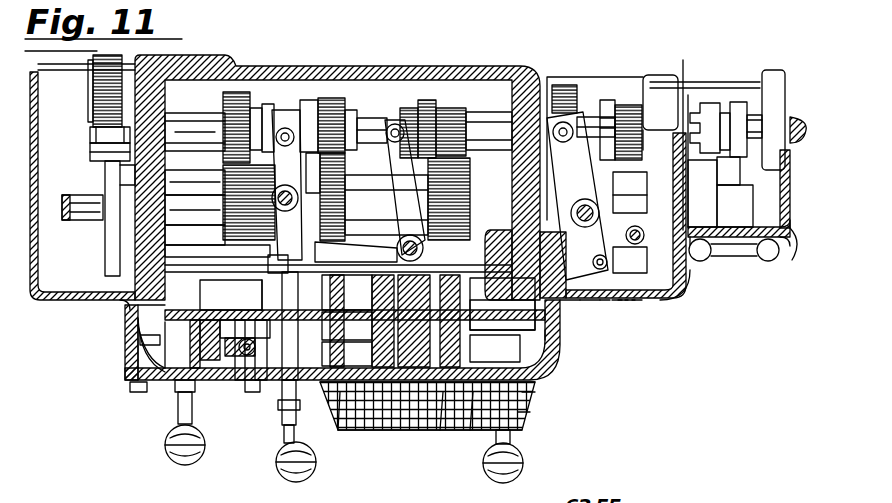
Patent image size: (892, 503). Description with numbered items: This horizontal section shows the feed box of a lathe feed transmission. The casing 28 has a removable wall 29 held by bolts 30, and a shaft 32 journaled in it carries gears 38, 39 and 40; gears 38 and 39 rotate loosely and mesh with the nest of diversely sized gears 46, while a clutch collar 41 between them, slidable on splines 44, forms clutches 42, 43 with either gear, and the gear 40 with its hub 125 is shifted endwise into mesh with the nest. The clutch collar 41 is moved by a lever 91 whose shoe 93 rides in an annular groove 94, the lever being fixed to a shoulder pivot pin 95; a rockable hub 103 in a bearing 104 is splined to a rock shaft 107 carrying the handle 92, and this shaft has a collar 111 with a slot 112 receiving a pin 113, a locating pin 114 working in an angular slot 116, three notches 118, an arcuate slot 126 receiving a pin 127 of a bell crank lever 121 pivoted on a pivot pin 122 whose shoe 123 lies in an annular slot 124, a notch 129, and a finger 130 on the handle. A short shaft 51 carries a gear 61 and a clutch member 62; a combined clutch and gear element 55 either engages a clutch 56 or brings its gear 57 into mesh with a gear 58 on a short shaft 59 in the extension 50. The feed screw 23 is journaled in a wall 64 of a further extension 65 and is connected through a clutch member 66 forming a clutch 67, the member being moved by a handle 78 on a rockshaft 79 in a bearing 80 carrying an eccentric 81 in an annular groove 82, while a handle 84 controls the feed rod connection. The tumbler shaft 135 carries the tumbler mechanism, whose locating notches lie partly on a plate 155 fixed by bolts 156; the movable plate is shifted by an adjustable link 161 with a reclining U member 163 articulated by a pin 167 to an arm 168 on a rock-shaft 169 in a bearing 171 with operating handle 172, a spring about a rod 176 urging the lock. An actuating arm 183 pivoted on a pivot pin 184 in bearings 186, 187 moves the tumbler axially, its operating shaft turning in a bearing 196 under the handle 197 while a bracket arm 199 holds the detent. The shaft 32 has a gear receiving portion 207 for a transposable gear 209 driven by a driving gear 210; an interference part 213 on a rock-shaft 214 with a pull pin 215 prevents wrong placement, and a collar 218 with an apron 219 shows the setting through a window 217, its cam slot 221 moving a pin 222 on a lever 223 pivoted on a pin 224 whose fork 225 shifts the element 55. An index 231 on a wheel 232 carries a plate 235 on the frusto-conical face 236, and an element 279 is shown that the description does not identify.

The feed screw 23 is at (798, 118).
The casing 28 is at (124, 305).
The removable wall 29 is at (128, 332).
The bolts 30 is at (132, 393).
The shaft 32 is at (196, 112).
The gear 38 is at (244, 100).
The gear 39 is at (347, 100).
The gear 40 is at (457, 152).
The clutch collar 41 is at (313, 103).
The clutch 42 is at (257, 105).
The clutch 43 is at (320, 102).
The splines 44 is at (270, 112).
The nest of gears 46 is at (433, 155).
The extension of the casing 50 is at (680, 298).
The short shaft 51 is at (622, 110).
The combined clutch and gear element 55 is at (566, 84).
The clutch 56 is at (543, 118).
The gear 57 is at (597, 130).
The gear 58 is at (625, 170).
The short shaft 59 is at (625, 200).
The gear 61 is at (660, 102).
The clutch member 62 is at (688, 105).
The wall 64 is at (767, 72).
The further extension 65 is at (793, 240).
The clutch member 66 is at (722, 108).
The clutch 67 is at (700, 108).
The handle 78 is at (713, 253).
The rockshaft 79 is at (724, 184).
The bearing 80 is at (735, 214).
The eccentric 81 is at (735, 162).
The annular groove 82 is at (727, 102).
The handle 84 is at (770, 258).
The lever 91 is at (216, 176).
The handle 92 is at (312, 460).
The shoe 93 is at (333, 187).
The annular groove 94 is at (326, 154).
The shoulder pivot pin 95 is at (226, 205).
The rockable hub 103 is at (272, 318).
The bearing 104 is at (263, 292).
The rock shaft 107 is at (278, 418).
The collar 111 is at (266, 256).
The slot 112 is at (236, 258).
The pin 113 is at (287, 213).
The locating pin 114 is at (264, 383).
The angular slot 116 is at (250, 402).
The notches 118 is at (258, 285).
The bell crank lever 121 is at (432, 123).
The pivot pin 122 is at (397, 248).
The shoe 123 is at (398, 150).
The annular slot 124 is at (378, 118).
The hub 125 is at (462, 110).
The arcuate slot 126 is at (348, 337).
The pin 127 is at (370, 308).
The notch 129 is at (308, 362).
The finger 130 is at (283, 445).
The tumbler shaft 135 is at (524, 264).
The plate 155 is at (577, 330).
The bolts 156 is at (577, 352).
The adjustable link 161 is at (125, 356).
The reclining U member 163 is at (232, 312).
The pin 167 is at (130, 380).
The arm 168 is at (124, 343).
The rock-shaft 169 is at (176, 392).
The bearing 171 is at (177, 423).
The operating handle 172 is at (172, 450).
The rod 176 is at (242, 356).
The actuating arm 183 is at (368, 302).
The pivot pin 184 is at (393, 432).
The bearing 186 is at (465, 285).
The bearing 187 is at (369, 432).
The bearing 196 is at (442, 352).
The operating handle 197 is at (518, 444).
The arm 199 is at (456, 318).
The gear receiving portion 207 is at (92, 132).
The transposable gear 209 is at (92, 157).
The driving gear 210 is at (93, 78).
The interference part 213 is at (110, 235).
The rock-shaft 214 is at (593, 304).
The spring-pressed pull pin 215 is at (85, 222).
The window 217 is at (623, 300).
The collar 218 is at (603, 300).
The apron 219 is at (630, 300).
The cam slot 221 is at (617, 300).
The pin 222 is at (637, 300).
The lever 223 is at (613, 112).
The pin 224 is at (586, 206).
The fork 225 is at (603, 120).
The index 231 is at (478, 426).
The wheel 232 is at (443, 432).
The plate 235 is at (542, 393).
The frusto-conical peripheral face 236 is at (542, 412).
The pin 279 is at (644, 242).